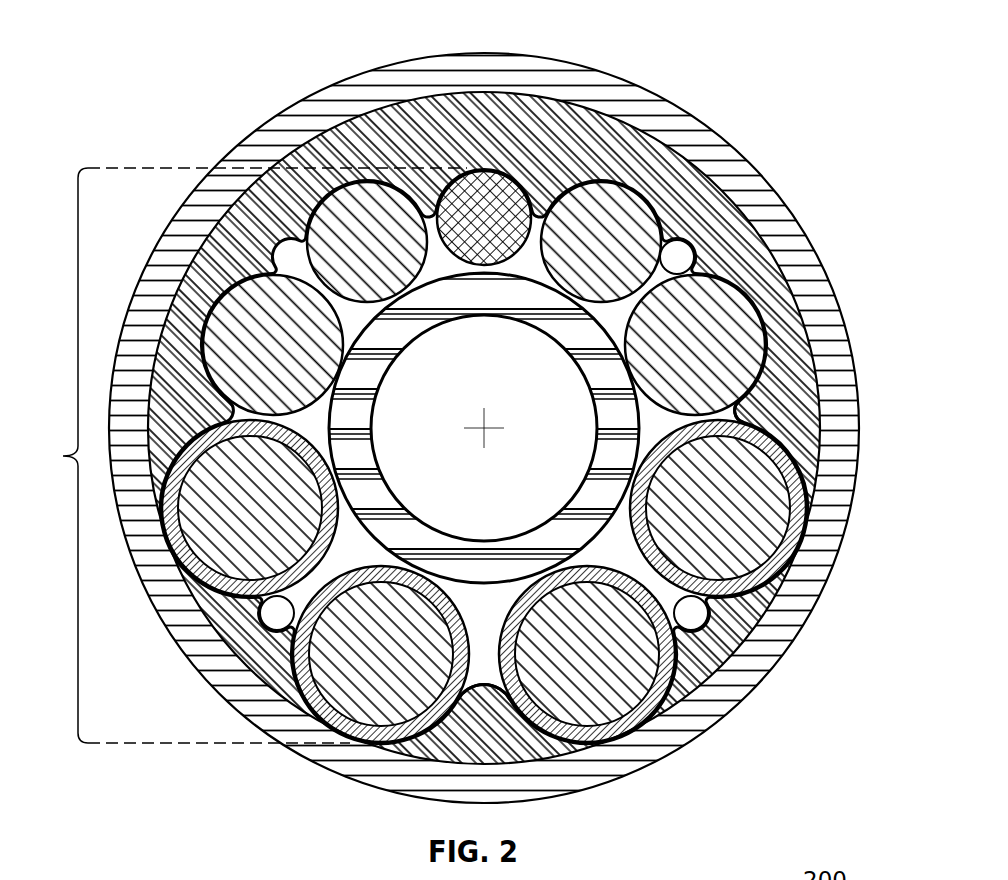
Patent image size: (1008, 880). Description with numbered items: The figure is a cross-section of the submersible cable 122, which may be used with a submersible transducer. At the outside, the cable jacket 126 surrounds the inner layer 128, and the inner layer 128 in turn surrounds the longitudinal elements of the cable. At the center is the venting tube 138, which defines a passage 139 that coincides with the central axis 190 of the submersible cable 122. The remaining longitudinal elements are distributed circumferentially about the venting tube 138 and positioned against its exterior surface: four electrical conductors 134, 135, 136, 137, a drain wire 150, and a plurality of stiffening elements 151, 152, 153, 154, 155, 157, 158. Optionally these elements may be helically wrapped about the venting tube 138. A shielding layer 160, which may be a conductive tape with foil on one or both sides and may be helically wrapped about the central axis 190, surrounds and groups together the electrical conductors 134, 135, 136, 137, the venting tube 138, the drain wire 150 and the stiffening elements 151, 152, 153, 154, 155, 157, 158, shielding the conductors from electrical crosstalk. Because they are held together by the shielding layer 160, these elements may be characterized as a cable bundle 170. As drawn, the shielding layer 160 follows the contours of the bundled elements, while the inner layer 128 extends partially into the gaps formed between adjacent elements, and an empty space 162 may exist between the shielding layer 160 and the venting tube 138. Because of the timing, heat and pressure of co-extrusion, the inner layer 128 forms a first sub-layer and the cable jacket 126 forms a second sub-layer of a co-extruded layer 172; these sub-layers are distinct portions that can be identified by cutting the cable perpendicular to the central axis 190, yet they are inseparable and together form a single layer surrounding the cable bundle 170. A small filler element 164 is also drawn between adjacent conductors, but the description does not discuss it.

The submersible cable 122 is at (683, 48).
The cable jacket 126 is at (381, 64).
The inner layer 128 is at (267, 193).
The venting tube 138 is at (434, 298).
The passage 139 is at (513, 501).
The central axis 190 is at (484, 428).
The drain wire 150 is at (539, 190).
The stiffening element 151 is at (243, 197).
The stiffening element 152 is at (690, 250).
The stiffening element 153 is at (691, 630).
The filler rod 164 is at (277, 630).
The stiffening element 154 is at (365, 238).
The stiffening element 155 is at (228, 330).
The stiffening element 157 is at (610, 218).
The stiffening element 158 is at (738, 313).
The shielding layer 160 is at (738, 412).
The empty space 162 is at (483, 678).
The co-extruded layer 172 is at (783, 435).
The cable bundle 170 is at (238, 455).
The electrical conductor 134 is at (213, 543).
The electrical conductor 135 is at (350, 703).
The electrical conductor 136 is at (588, 707).
The electrical conductor 137 is at (718, 538).